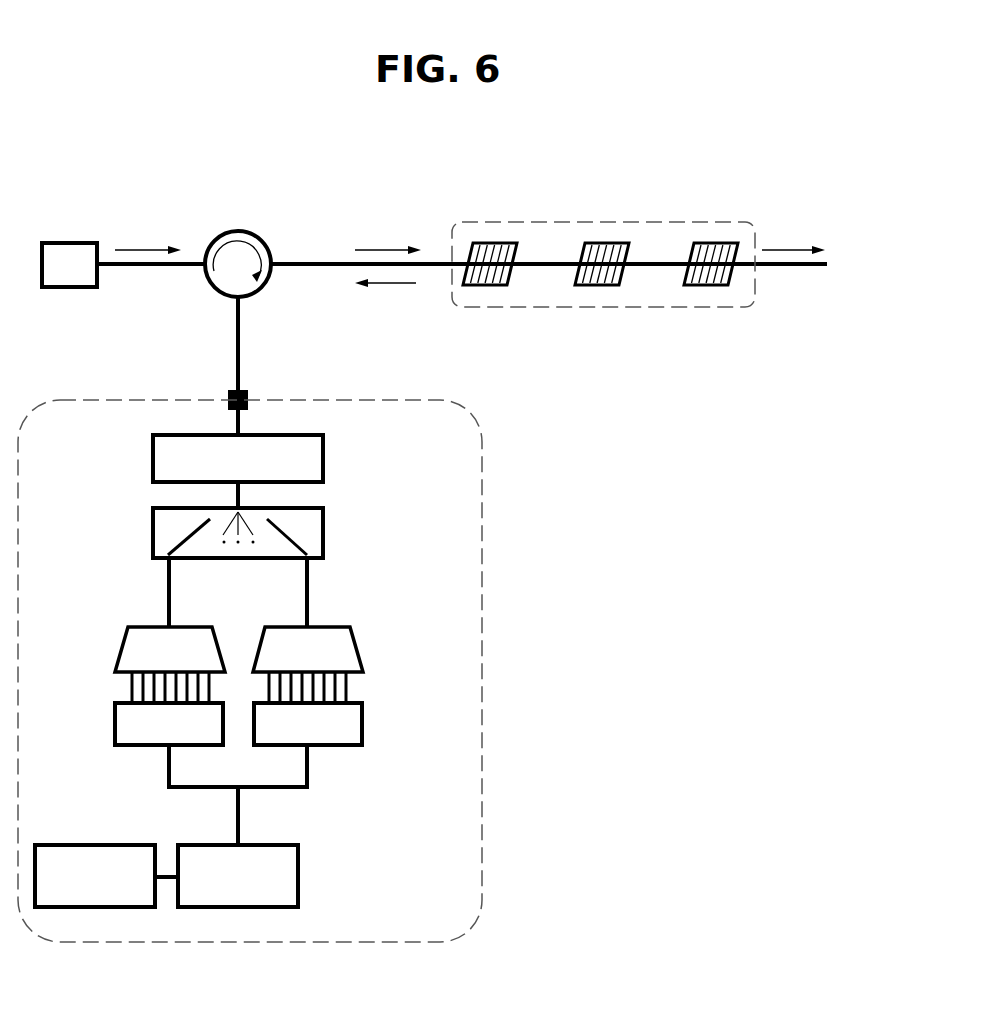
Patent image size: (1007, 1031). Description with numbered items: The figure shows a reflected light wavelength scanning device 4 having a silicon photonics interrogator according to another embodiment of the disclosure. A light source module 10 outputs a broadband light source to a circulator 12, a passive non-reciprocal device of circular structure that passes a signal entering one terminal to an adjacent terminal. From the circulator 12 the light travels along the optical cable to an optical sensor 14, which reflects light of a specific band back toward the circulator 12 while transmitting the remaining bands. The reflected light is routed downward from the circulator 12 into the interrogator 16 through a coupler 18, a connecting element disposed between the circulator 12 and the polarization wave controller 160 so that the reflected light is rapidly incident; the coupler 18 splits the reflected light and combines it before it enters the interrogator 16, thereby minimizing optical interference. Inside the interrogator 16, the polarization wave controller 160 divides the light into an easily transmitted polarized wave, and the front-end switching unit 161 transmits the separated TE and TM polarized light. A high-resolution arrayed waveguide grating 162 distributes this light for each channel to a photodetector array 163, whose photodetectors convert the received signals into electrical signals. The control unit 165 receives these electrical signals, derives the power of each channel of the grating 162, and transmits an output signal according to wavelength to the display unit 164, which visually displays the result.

The reflected light wavelength scanning device 4 is at (422, 579).
The light source module 10 is at (66, 243).
The circulator 12 is at (236, 232).
The optical sensor 14 is at (600, 222).
The interrogator 16 is at (482, 562).
The coupler 18 is at (248, 400).
The polarization wave controller 160 is at (323, 455).
The front-end switching unit 161 is at (323, 530).
The high-resolution arrayed waveguide grating 162 is at (363, 643).
The photodetector array 163 is at (362, 720).
The display unit 164 is at (92, 845).
The control unit 165 is at (298, 875).